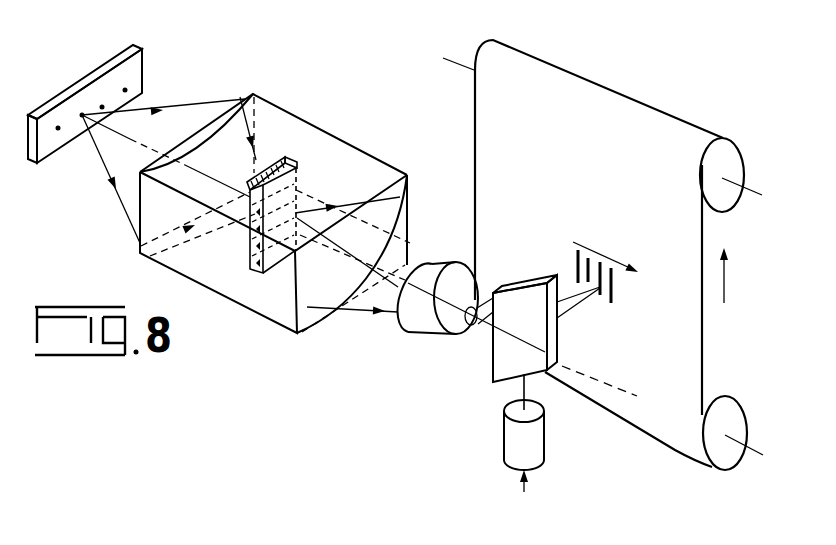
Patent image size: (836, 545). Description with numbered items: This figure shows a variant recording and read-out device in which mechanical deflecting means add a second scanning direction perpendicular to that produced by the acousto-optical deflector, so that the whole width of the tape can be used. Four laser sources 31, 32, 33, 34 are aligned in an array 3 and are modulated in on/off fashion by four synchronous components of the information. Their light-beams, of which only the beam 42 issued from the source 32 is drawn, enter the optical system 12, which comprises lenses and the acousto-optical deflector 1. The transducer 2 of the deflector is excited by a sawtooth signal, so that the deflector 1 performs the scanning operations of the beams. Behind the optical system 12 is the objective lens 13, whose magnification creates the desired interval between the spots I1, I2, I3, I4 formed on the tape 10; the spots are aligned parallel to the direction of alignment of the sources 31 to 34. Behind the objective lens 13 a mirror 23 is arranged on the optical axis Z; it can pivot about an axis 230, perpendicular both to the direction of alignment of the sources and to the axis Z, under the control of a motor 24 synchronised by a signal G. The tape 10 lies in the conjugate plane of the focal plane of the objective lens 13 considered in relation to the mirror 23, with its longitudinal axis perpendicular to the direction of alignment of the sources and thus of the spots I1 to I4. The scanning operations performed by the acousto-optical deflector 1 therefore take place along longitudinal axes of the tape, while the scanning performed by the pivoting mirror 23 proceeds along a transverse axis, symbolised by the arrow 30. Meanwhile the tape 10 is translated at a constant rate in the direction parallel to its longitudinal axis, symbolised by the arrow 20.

The array 3 is at (143, 63).
The laser source 31 is at (58, 128).
The laser source 32 is at (82, 115).
The laser source 33 is at (102, 107).
The laser source 34 is at (125, 90).
The light-beam 42 is at (258, 43).
The optical system 12 is at (273, 323).
The deflector 1 is at (297, 172).
The transducer 2 is at (283, 158).
The objective lens 13 is at (414, 326).
The mirror 23 is at (493, 360).
The axis 230 is at (520, 388).
The motor 24 is at (599, 437).
The signal G is at (536, 486).
The tape 10 is at (677, 448).
The arrow 20 is at (726, 284).
The arrow 30 is at (606, 256).
The spot I1 is at (613, 302).
The spot I2 is at (602, 300).
The spot I3 is at (588, 272).
The spot I4 is at (578, 270).
The optical axis Z is at (607, 385).